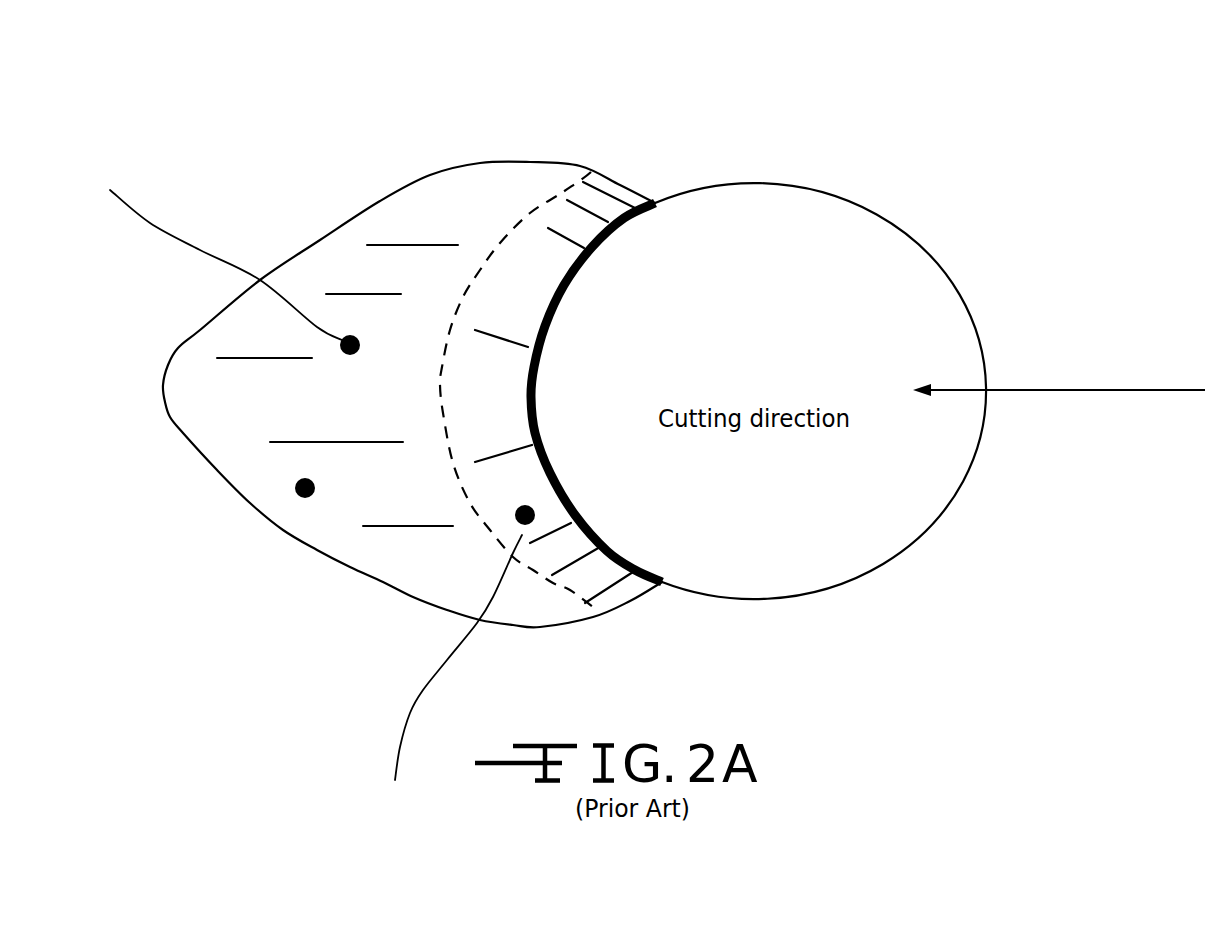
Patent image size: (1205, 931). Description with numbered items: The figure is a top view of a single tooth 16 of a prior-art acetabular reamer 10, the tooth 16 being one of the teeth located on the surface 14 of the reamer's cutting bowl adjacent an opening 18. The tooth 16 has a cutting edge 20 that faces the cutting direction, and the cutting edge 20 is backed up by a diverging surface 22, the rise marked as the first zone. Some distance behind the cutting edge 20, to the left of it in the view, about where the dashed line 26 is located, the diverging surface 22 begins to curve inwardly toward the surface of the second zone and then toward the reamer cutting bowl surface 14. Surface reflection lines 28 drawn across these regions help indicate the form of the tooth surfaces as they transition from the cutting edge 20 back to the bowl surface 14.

The acetabular reamer 10 is at (447, 657).
The surface 14 is at (75, 478).
The tooth 16 is at (298, 487).
The opening 18 is at (968, 508).
The cutting edge 20 is at (548, 354).
The diverging surface 22 is at (462, 424).
The dashed line 26 is at (480, 520).
The surface reflection lines 28 is at (491, 318).